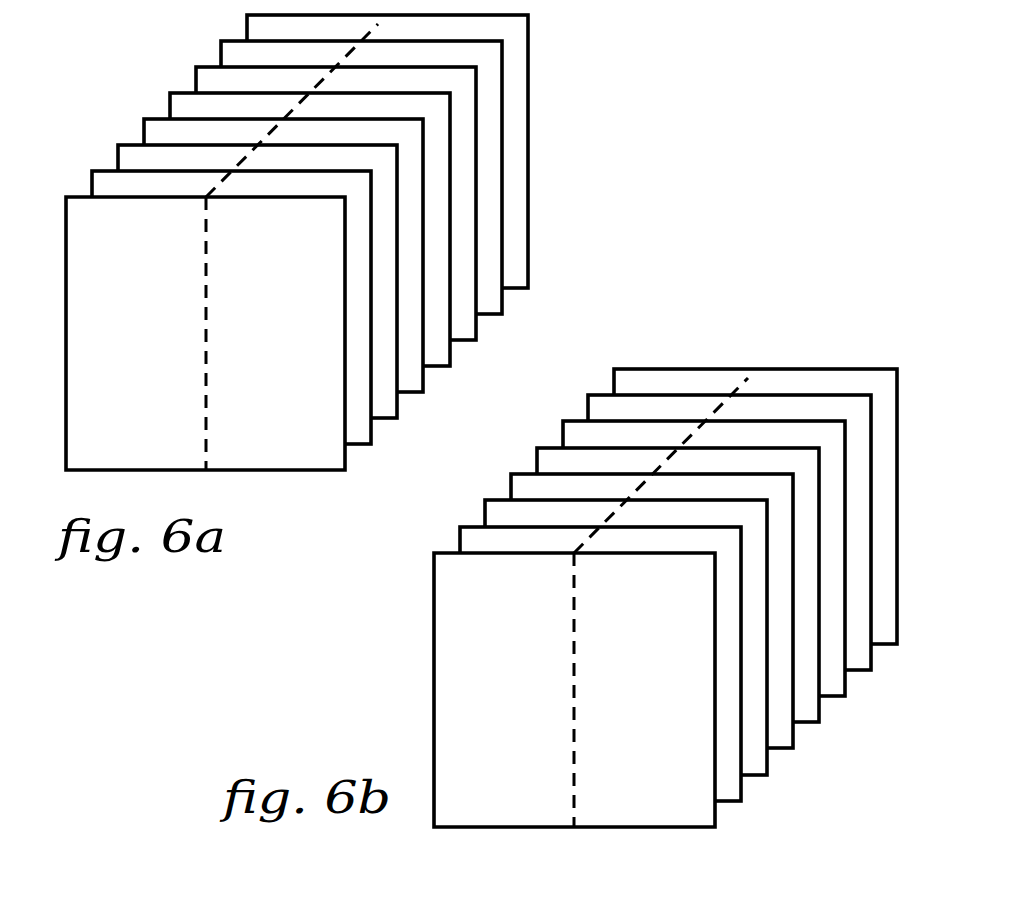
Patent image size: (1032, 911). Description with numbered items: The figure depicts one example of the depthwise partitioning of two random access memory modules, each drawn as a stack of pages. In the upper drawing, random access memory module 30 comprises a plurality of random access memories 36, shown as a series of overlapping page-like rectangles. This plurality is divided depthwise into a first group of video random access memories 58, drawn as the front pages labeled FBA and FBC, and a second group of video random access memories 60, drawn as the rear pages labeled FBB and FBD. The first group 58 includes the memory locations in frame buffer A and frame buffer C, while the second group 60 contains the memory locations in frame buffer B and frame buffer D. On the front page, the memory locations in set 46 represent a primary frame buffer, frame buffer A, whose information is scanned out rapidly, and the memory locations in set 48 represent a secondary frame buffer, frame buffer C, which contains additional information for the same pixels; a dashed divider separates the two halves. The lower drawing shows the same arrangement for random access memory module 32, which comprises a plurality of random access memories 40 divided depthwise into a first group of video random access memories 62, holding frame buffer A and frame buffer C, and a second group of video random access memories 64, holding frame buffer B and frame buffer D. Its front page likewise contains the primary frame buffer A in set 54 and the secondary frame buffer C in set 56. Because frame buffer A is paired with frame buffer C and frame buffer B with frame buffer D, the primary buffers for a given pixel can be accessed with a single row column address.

In FIG. 6A, the random access memory module 30 is at (395, 238).
In FIG. 6A, the random access memories 36 is at (513, 198).
In FIG. 6A, the set 46 is at (114, 272).
In FIG. 6A, the set 48 is at (254, 272).
In FIG. 6A, the first group of video random access memories 58 is at (137, 118).
In FIG. 6A, the second group of video random access memories 60 is at (447, 186).
In FIG. 6B, the random access memory module 32 is at (565, 558).
In FIG. 6B, the random access memories 40 is at (835, 366).
In FIG. 6B, the set 54 is at (482, 628).
In FIG. 6B, the set 56 is at (622, 628).
In FIG. 6B, the first group of video random access memories 62 is at (497, 467).
In FIG. 6B, the second group of video random access memories 64 is at (701, 505).